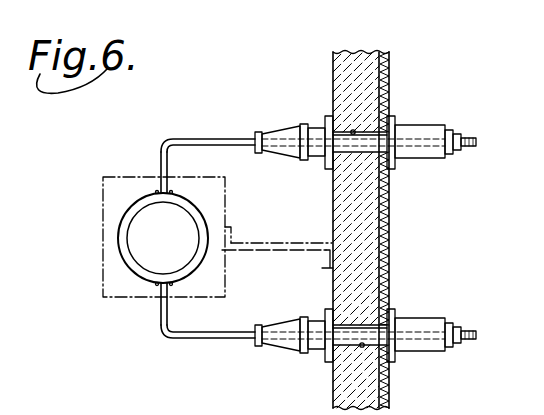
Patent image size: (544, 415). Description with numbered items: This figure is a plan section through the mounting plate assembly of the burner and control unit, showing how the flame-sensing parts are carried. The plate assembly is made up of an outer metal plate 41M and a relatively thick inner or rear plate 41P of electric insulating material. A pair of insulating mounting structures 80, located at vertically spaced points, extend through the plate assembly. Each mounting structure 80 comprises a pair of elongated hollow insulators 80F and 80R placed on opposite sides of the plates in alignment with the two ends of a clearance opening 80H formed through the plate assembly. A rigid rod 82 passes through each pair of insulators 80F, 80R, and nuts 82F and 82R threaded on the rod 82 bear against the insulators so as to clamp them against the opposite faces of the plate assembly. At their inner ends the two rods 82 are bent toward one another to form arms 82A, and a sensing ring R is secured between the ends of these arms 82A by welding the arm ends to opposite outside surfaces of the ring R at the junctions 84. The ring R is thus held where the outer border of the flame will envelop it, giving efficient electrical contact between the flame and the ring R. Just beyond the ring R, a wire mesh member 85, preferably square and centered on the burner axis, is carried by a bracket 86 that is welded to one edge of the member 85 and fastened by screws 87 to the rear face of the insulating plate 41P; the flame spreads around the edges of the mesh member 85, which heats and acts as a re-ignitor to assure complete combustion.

The inner or rear plate 41P is at (368, 228).
The outer metal plate 41M is at (386, 273).
The sensing ring R is at (118, 241).
The wire mesh member 85 is at (225, 193).
The bracket 86 is at (283, 237).
The screws 87 is at (326, 259).
The rigid rod 82 is at (213, 118).
The bent arms of the rods 82A is at (161, 166).
The cable junction 84 is at (156, 192).
The rear nut 82R is at (259, 153).
The rear hollow insulator 80R is at (316, 107).
The insulating mounting structure 80 is at (412, 160).
The front hollow insulator 80F is at (440, 112).
The front nut 82F is at (458, 150).
The clearance opening 80H is at (353, 131).